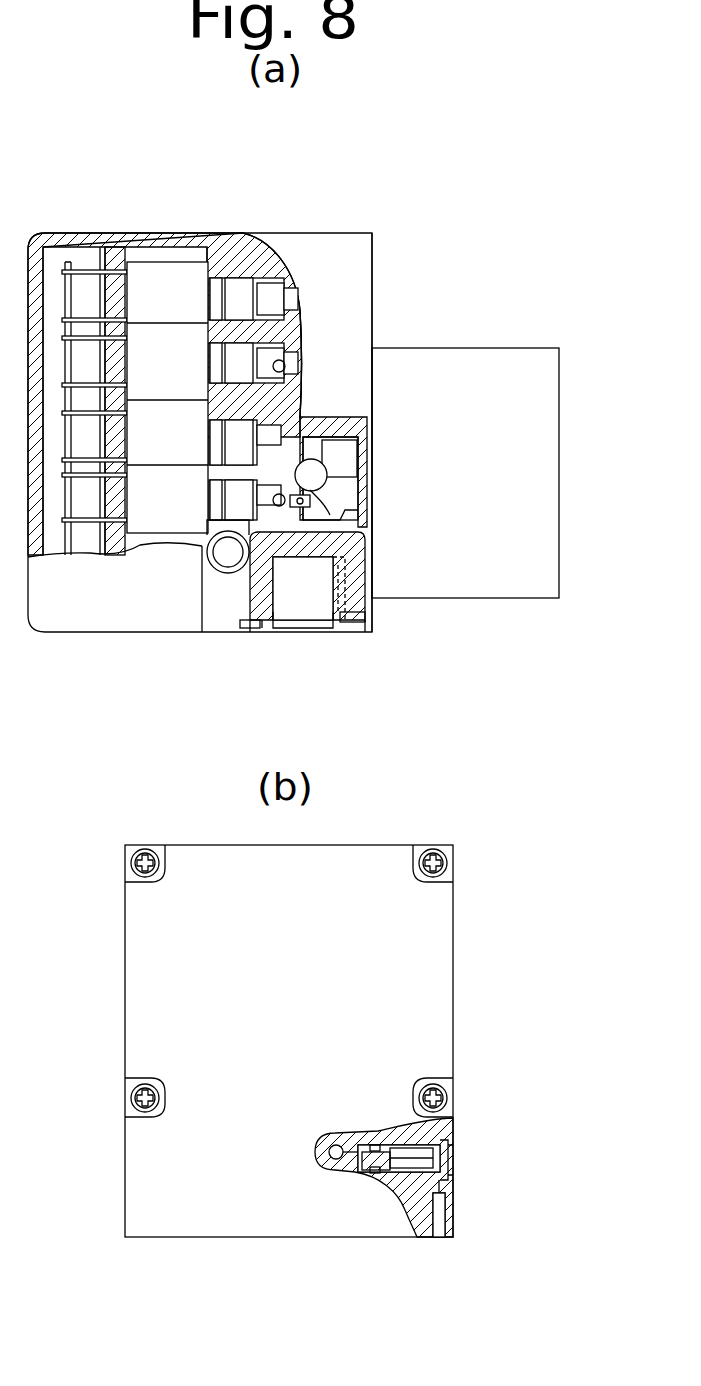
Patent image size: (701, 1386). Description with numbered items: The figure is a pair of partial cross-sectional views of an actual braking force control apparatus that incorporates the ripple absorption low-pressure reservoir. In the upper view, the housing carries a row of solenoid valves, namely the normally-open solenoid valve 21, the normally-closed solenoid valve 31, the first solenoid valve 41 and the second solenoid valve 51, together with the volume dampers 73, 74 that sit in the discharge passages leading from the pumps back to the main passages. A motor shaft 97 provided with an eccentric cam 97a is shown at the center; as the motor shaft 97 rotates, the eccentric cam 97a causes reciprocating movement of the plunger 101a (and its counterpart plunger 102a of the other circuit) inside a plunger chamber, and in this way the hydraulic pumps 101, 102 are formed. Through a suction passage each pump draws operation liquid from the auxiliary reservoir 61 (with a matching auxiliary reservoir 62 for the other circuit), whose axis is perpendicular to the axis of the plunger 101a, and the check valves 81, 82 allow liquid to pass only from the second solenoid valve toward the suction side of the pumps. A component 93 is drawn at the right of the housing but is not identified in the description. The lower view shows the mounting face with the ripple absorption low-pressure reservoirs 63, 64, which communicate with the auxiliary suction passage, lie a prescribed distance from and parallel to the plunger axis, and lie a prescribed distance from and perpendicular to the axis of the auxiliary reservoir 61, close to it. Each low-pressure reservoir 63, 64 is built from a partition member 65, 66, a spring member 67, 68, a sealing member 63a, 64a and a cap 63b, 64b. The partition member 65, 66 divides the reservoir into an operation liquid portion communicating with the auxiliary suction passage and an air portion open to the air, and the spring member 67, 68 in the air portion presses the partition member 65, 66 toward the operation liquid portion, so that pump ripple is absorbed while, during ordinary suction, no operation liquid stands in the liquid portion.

In FIG. 8A, the normally-open solenoid valve 21 is at (185, 323).
In FIG. 8A, the normally-closed solenoid valve 31 is at (185, 323).
In FIG. 8A, the first solenoid valve 41 is at (185, 323).
In FIG. 8A, the second solenoid valve 51 is at (168, 278).
In FIG. 8A, the volume damper 73 is at (370, 392).
In FIG. 8A, the volume damper 74 is at (345, 272).
In FIG. 8A, the connector 93 is at (525, 370).
In FIG. 8A, the motor shaft 97 is at (345, 477).
In FIG. 8A, the eccentric cam 97a is at (338, 457).
In FIG. 8A, the hydraulic pump 101 is at (419, 495).
In FIG. 8A, the hydraulic pump 102 is at (322, 484).
In FIG. 8A, the plunger 101a is at (433, 535).
In FIG. 8A, the ball seat 102a is at (317, 490).
In FIG. 8A, the first check valve 81 is at (389, 576).
In FIG. 8A, the first check valve 82 is at (300, 505).
In FIG. 8A, the auxiliary reservoir 61 is at (302, 618).
In FIG. 8A, the lower connector 62 is at (262, 628).
In FIG. 8B, the ripple absorption low-pressure reservoir 63 is at (462, 1162).
In FIG. 8B, the ripple absorption low-pressure reservoir 64 is at (437, 1131).
In FIG. 8B, the sealing member 63a is at (446, 1225).
In FIG. 8B, the tongue inner block 64a is at (377, 1177).
In FIG. 8B, the cap 63b is at (509, 1159).
In FIG. 8B, the tongue slot 64b is at (442, 1160).
In FIG. 8B, the partition member 65 is at (343, 1239).
In FIG. 8B, the partition member 66 is at (360, 1177).
In FIG. 8B, the spring member 67 is at (521, 1188).
In FIG. 8B, the spring member 68 is at (450, 1167).